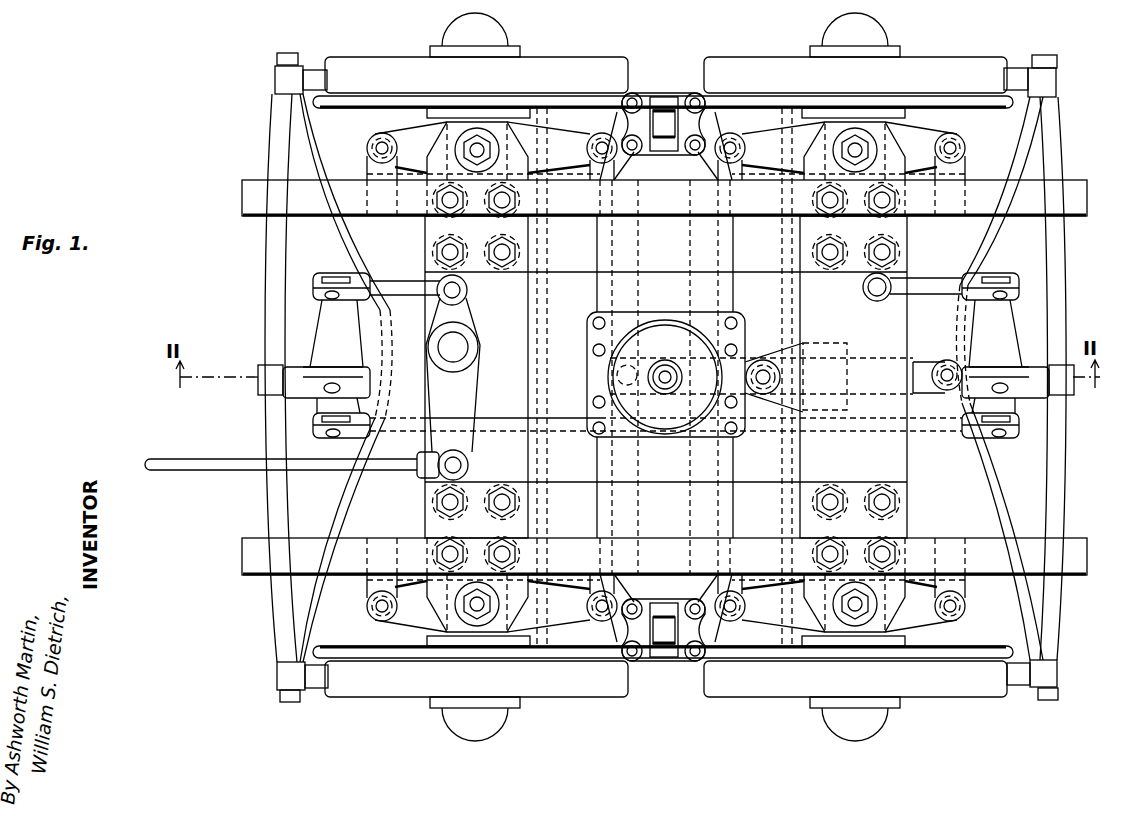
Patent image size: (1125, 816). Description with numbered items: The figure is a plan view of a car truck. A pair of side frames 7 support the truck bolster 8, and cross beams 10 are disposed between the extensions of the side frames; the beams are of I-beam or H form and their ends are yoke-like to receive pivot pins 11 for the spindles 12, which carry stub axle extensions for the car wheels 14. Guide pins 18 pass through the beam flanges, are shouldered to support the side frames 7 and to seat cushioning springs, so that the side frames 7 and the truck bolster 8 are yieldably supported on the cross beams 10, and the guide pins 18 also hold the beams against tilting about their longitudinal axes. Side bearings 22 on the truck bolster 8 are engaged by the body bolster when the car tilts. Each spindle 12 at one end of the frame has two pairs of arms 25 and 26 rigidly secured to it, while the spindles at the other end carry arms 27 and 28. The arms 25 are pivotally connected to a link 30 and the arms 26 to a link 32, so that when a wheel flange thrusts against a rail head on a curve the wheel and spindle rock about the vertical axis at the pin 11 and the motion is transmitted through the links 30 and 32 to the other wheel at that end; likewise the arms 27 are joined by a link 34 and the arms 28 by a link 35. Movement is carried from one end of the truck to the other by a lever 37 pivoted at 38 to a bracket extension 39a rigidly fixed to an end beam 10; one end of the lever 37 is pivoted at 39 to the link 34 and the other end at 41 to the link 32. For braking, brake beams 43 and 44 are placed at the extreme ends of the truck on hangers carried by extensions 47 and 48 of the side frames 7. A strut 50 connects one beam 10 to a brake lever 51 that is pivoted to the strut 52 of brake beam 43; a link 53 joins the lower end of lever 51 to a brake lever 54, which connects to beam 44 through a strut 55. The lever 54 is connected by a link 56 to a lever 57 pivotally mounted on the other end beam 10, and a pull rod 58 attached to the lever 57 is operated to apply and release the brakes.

The side frames 7 is at (570, 262).
The truck bolster 8 is at (585, 365).
The cross beams 10 is at (522, 328).
The pivot pins 11 is at (492, 152).
The spindles 12 is at (508, 137).
The car wheels 14 is at (565, 60).
The guide pins 18 is at (500, 553).
The side bearings 22 is at (668, 100).
The arms or extensions 25 is at (410, 137).
The arms 26 is at (548, 130).
The arms 27 is at (917, 138).
The arms 28 is at (763, 137).
The link 30 is at (370, 587).
The link 32 is at (630, 525).
The link 34 is at (963, 168).
The link 35 is at (702, 543).
The lever 37 is at (866, 400).
The pivot 38 is at (760, 365).
The pivotal connection 39 is at (972, 368).
The bracket extension 39a is at (833, 345).
The pivotal connection 41 is at (635, 367).
The brake beam 43 is at (1055, 265).
The brake beam 44 is at (270, 245).
The extension 47 is at (1073, 205).
The extension 48 is at (240, 198).
The strut or link 50 is at (920, 287).
The brake lever 51 is at (1003, 313).
The strut 52 is at (1040, 365).
The link 53 is at (983, 433).
The brake lever 54 is at (323, 325).
The strut 55 is at (290, 368).
The link 56 is at (466, 295).
The lever 57 is at (472, 393).
The pull rod 58 is at (185, 463).